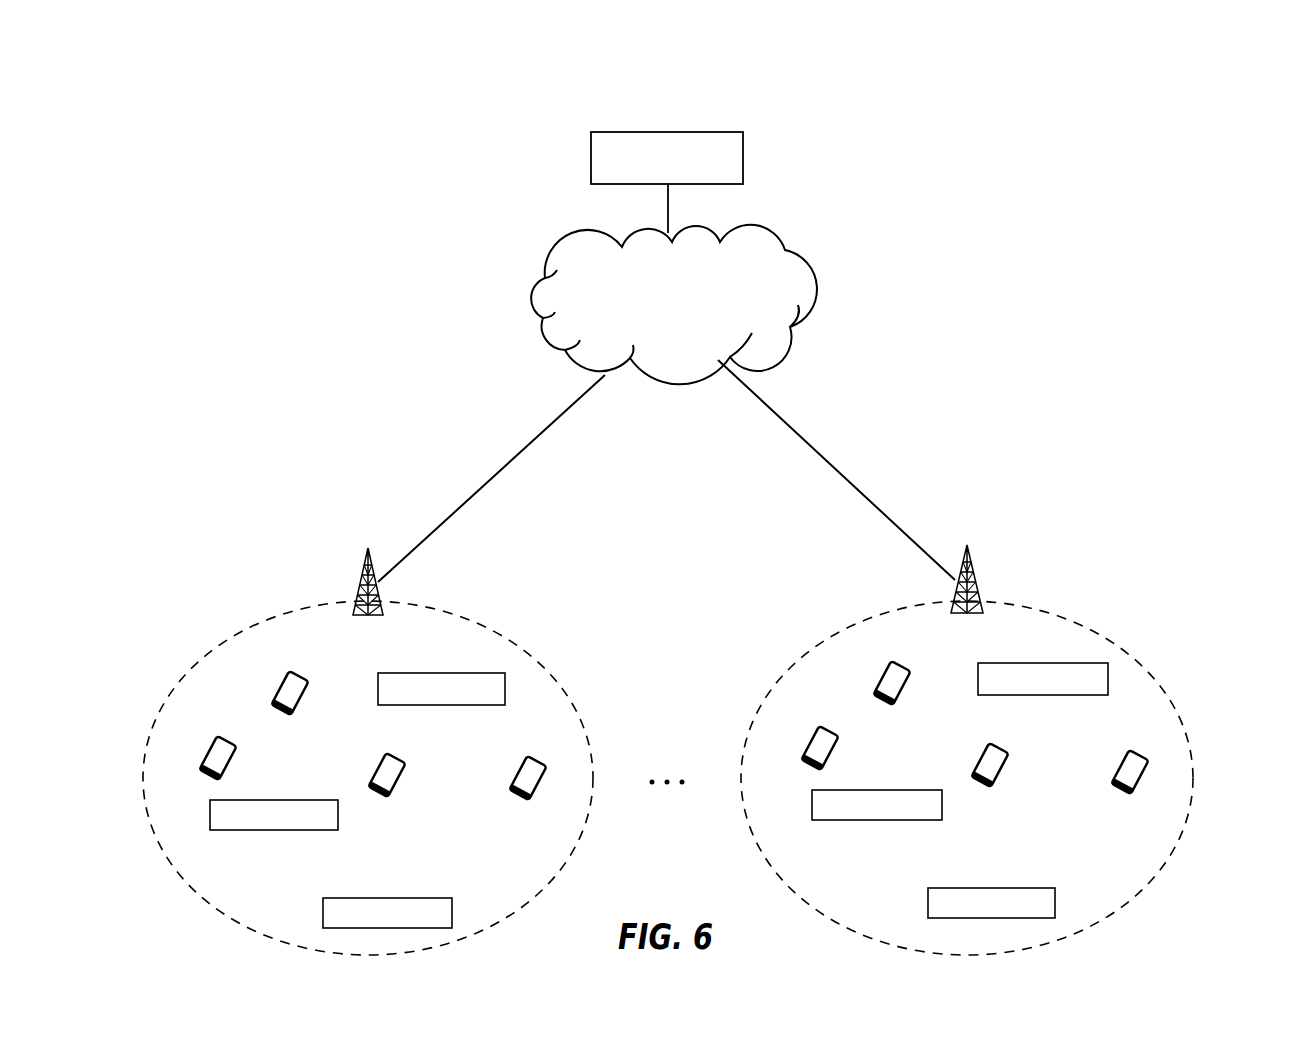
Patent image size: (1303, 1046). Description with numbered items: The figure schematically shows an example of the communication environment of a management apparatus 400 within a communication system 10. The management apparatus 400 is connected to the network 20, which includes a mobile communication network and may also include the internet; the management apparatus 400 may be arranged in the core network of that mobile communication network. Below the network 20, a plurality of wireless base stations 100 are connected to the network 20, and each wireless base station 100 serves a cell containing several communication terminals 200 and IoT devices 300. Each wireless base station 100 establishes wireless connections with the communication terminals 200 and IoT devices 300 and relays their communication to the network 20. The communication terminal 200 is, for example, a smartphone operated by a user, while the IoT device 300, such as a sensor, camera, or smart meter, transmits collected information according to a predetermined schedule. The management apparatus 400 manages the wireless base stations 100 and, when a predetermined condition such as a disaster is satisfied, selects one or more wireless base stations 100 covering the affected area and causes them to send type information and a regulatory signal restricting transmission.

The communication system 10 is at (332, 64).
The network 20 is at (808, 262).
The wireless base station 100 is at (370, 546).
The communication terminal 200 is at (307, 665).
The IoT device 300 is at (476, 662).
The management apparatus 400 is at (745, 160).